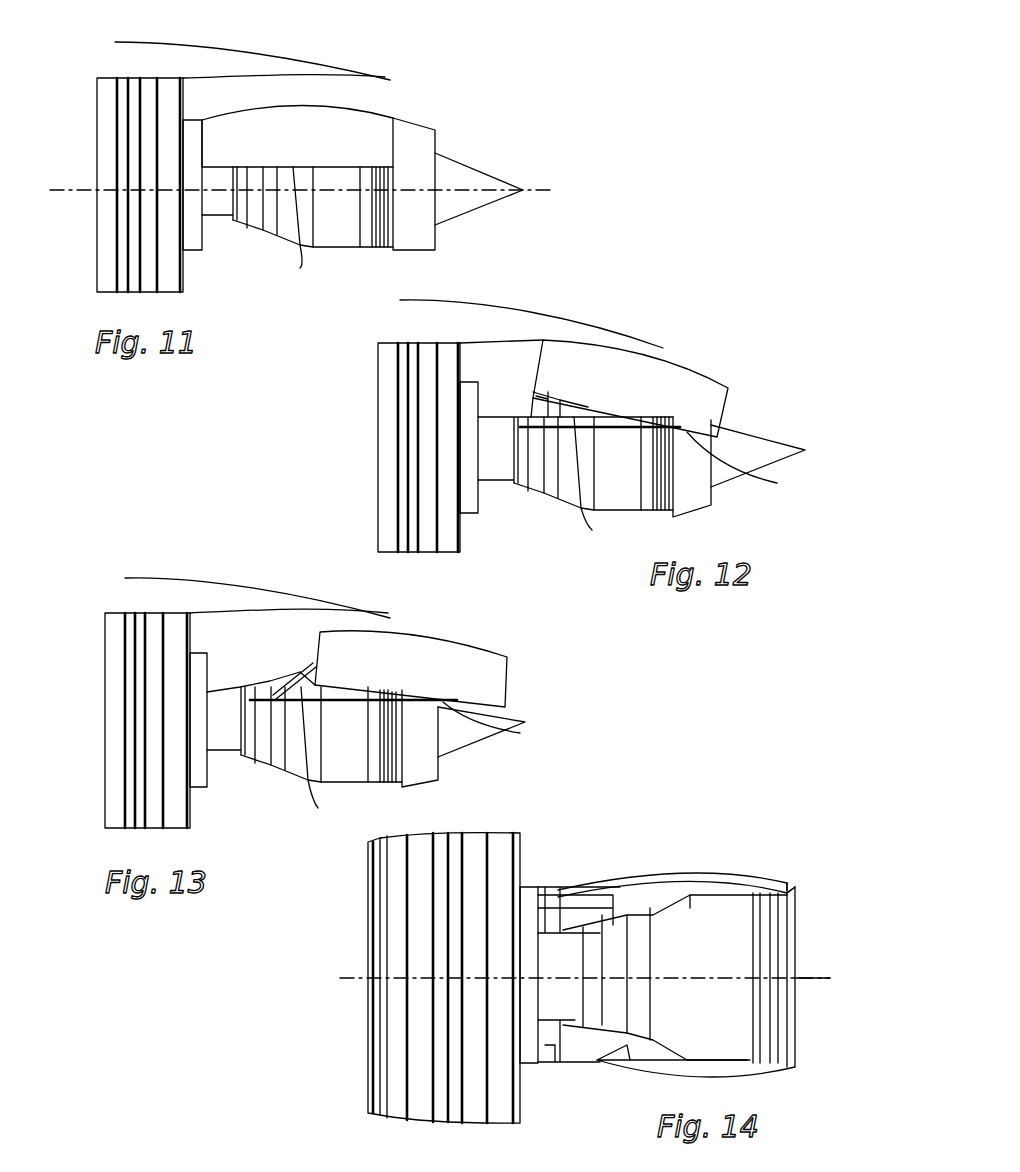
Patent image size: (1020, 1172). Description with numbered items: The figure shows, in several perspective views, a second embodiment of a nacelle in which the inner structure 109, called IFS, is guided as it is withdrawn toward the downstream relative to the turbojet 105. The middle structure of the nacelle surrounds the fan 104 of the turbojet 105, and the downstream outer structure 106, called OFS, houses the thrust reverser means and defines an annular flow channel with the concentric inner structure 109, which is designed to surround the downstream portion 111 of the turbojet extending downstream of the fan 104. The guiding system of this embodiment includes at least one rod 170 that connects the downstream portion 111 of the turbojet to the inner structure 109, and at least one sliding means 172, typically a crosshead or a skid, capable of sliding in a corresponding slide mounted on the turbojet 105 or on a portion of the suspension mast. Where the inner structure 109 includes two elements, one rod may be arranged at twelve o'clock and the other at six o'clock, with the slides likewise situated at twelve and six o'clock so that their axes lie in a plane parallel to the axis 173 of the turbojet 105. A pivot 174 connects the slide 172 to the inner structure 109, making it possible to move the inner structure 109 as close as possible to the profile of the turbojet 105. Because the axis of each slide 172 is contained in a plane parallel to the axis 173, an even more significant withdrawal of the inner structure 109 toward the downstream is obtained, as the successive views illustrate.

In FIG. 11, the fan 104 is at (97, 92).
In FIG. 12, the fan 104 is at (378, 353).
In FIG. 13, the fan 104 is at (103, 627).
In FIG. 14, the fan 104 is at (385, 899).
In FIG. 11, the turbojet 105 is at (340, 252).
In FIG. 12, the turbojet 105 is at (626, 514).
In FIG. 13, the turbojet 105 is at (355, 792).
In FIG. 14, the turbojet 105 is at (718, 1034).
In FIG. 11, the outer structure 106 is at (285, 67).
In FIG. 12, the outer structure 106 is at (569, 327).
In FIG. 13, the outer structure 106 is at (295, 597).
In FIG. 11, the inner structure 109 is at (383, 110).
In FIG. 12, the inner structure 109 is at (706, 372).
In FIG. 13, the inner structure 109 is at (490, 642).
In FIG. 14, the inner structure 109 is at (707, 870).
In FIG. 11, the downstream portion 111 is at (216, 205).
In FIG. 12, the downstream portion 111 is at (495, 473).
In FIG. 13, the downstream portion 111 is at (220, 747).
In FIG. 14, the downstream portion 111 is at (575, 1005).
In FIG. 12, the rod 170 is at (535, 369).
In FIG. 13, the rod 170 is at (310, 670).
In FIG. 14, the rod 170 is at (573, 888).
In FIG. 11, the sliding means 172 is at (280, 223).
In FIG. 12, the sliding means 172 is at (600, 480).
In FIG. 13, the sliding means 172 is at (353, 754).
In FIG. 14, the sliding means 172 is at (710, 898).
In FIG. 11, the axis 173 is at (541, 184).
In FIG. 14, the axis 173 is at (803, 978).
In FIG. 12, the pivot 174 is at (753, 460).
In FIG. 13, the pivot 174 is at (501, 729).
In FIG. 14, the pivot 174 is at (787, 896).